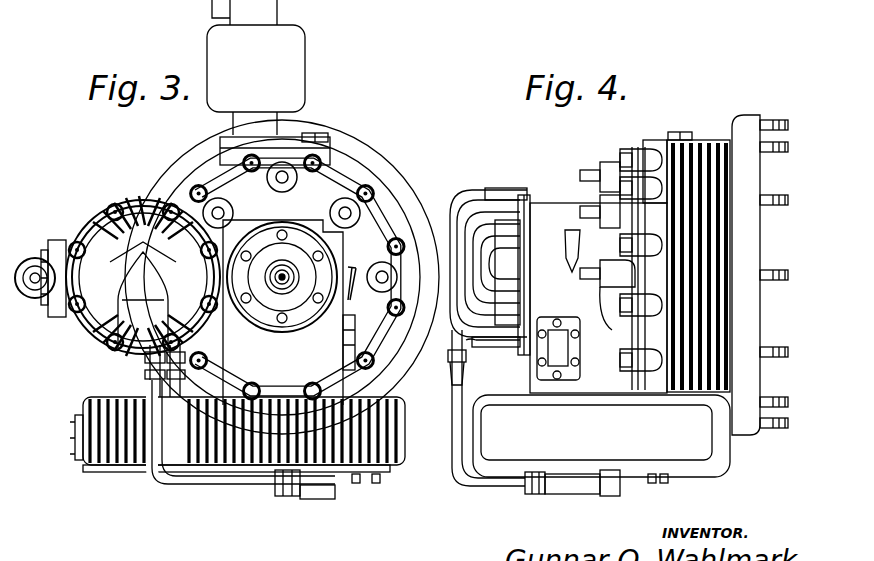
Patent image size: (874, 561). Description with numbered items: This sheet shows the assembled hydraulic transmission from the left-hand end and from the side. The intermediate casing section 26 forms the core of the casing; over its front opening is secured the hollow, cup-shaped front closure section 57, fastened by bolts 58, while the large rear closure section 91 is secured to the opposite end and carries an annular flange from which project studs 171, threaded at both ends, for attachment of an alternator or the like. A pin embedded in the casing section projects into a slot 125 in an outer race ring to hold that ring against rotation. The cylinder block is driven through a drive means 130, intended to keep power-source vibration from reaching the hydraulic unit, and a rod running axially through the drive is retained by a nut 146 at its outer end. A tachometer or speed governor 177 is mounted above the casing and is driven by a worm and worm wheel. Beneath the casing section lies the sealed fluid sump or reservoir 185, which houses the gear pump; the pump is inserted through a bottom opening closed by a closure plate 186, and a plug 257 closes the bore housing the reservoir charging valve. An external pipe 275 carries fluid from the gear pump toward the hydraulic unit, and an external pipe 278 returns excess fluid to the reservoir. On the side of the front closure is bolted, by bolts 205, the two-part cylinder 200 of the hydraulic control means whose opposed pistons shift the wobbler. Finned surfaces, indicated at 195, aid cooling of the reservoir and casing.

In FIG. 3, the intermediate casing section 26 is at (370, 228).
In FIG. 4, the intermediate casing section 26 is at (585, 308).
In FIG. 3, the front closure section 57 is at (88, 336).
In FIG. 4, the front closure section 57 is at (470, 243).
In FIG. 3, the bolts 58 is at (170, 205).
In FIG. 4, the rear closure section 91 is at (668, 291).
In FIG. 3, the slot 125 is at (286, 285).
In FIG. 3, the drive means 130 is at (260, 228).
In FIG. 4, the drive means 130 is at (498, 285).
In FIG. 3, the nut 146 is at (278, 285).
In FIG. 4, the studs 171 is at (778, 285).
In FIG. 3, the tachometer or speed governor 177 is at (305, 70).
In FIG. 4, the fluid sump or reservoir 185 is at (520, 448).
In FIG. 3, the closure plate 186 is at (345, 484).
In FIG. 4, the closure plate 186 is at (650, 484).
In FIG. 3, the oil cooler fin block 195 is at (408, 468).
In FIG. 3, the two-part cylinder 200 is at (38, 300).
In FIG. 3, the bolts 205 is at (50, 245).
In FIG. 3, the plug 257 is at (320, 135).
In FIG. 4, the plug 257 is at (678, 133).
In FIG. 3, the external pipe 275 is at (205, 486).
In FIG. 4, the external pipe 275 is at (452, 464).
In FIG. 3, the external pipe 278 is at (148, 388).
In FIG. 4, the external pipe 278 is at (456, 392).